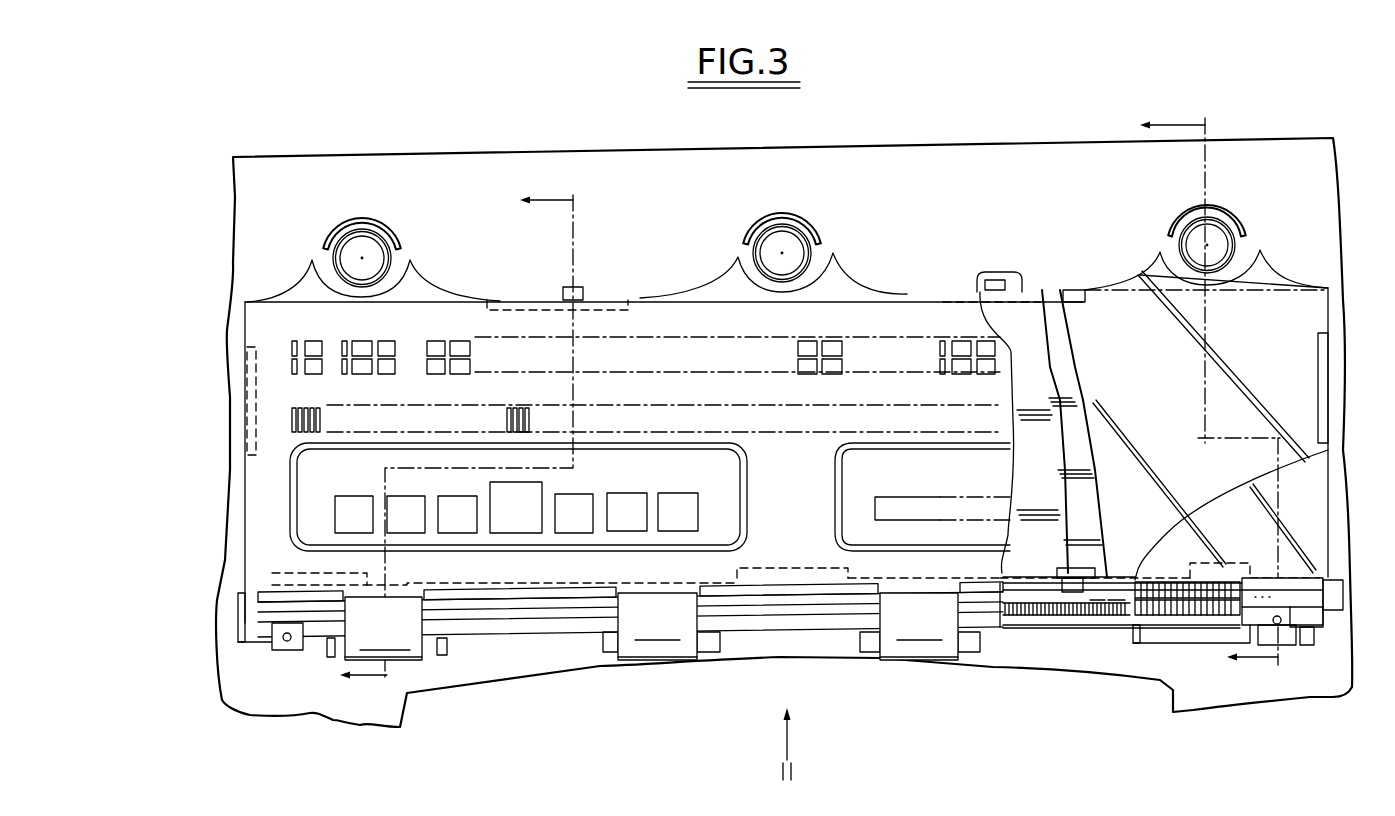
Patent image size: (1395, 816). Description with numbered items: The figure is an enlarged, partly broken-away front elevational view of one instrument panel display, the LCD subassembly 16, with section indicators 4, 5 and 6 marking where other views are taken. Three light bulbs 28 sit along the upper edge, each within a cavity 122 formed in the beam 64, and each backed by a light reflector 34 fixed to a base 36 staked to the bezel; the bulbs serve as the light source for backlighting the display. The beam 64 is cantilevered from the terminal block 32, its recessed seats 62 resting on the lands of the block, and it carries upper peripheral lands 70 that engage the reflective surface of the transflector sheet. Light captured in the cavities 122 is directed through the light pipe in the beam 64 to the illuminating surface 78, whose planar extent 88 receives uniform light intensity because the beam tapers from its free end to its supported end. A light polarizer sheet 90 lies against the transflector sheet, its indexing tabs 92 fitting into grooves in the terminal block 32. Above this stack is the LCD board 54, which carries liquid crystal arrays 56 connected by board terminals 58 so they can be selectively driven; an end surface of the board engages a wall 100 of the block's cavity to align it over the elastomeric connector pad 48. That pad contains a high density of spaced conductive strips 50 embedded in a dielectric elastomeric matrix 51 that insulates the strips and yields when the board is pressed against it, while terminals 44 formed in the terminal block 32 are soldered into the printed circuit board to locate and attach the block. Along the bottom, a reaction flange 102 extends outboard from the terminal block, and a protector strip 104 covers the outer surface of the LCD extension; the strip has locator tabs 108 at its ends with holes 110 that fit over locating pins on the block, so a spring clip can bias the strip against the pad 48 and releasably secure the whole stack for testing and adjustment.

The LCD subassembly 16 is at (860, 266).
The light bulb 28 is at (373, 252).
The terminal block 32 is at (1031, 642).
The light reflector 34 is at (362, 220).
The base 36 is at (1100, 572).
The terminal 44 is at (1068, 608).
The elastomeric connector pad 48 is at (1006, 636).
The conductive strip 50 is at (1113, 608).
The dielectric elastomeric matrix 51 is at (1098, 608).
The LCD board 54 is at (911, 310).
The liquid crystal array 56 is at (838, 331).
The board terminal 58 is at (1175, 617).
The recessed seat 62 is at (418, 575).
The beam 64 is at (1272, 280).
The upper peripheral land 70 is at (600, 300).
The illuminating surface 78 is at (1316, 320).
The planar extent 88 is at (1143, 392).
The light polarizer sheet 90 is at (1040, 376).
The indexing tab 92 is at (1070, 590).
The wall 100 is at (240, 625).
The reaction flange 102 is at (447, 650).
The protector strip 104 is at (1267, 582).
The locator tab 108 is at (284, 650).
The hole 110 is at (291, 650).
The cavity 122 is at (738, 255).
The section line 4 is at (787, 748).
The section line 5 is at (456, 443).
The section line 6 is at (1210, 392).